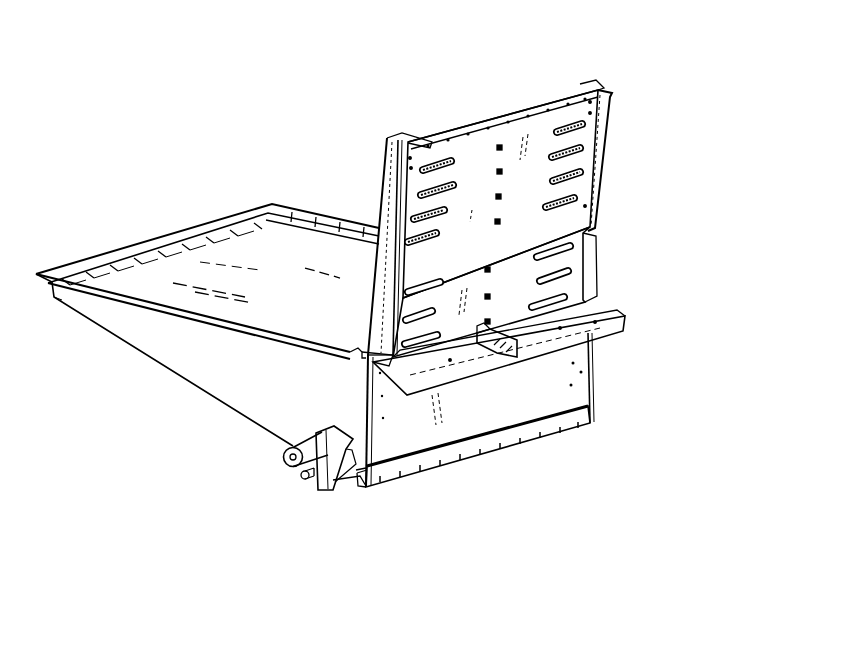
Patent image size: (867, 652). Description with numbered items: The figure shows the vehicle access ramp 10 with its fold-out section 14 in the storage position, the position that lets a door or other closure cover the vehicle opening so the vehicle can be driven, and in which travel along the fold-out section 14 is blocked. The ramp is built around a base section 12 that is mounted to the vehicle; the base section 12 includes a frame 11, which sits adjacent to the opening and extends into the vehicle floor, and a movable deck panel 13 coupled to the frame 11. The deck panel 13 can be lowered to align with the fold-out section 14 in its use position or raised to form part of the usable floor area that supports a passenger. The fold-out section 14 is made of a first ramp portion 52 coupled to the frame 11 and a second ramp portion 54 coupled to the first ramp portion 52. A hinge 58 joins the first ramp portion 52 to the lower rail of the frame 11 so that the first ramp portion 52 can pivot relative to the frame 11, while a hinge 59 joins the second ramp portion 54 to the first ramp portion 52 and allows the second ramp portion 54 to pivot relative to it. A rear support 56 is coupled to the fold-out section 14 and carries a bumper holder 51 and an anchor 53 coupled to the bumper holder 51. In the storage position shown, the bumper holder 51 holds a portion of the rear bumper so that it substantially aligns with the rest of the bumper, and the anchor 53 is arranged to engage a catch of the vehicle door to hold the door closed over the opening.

The vehicle access ramp 10 is at (652, 90).
The frame 11 is at (195, 387).
The base section 12 is at (110, 240).
The deck panel 13 is at (263, 275).
The fold-out section 14 is at (620, 195).
The bumper holder 51 is at (592, 377).
The first ramp portion 52 is at (589, 253).
The anchor 53 is at (517, 353).
The second ramp portion 54 is at (618, 136).
The rear support 56 is at (632, 337).
The hinge 58 is at (516, 437).
The hinge 59 is at (492, 103).